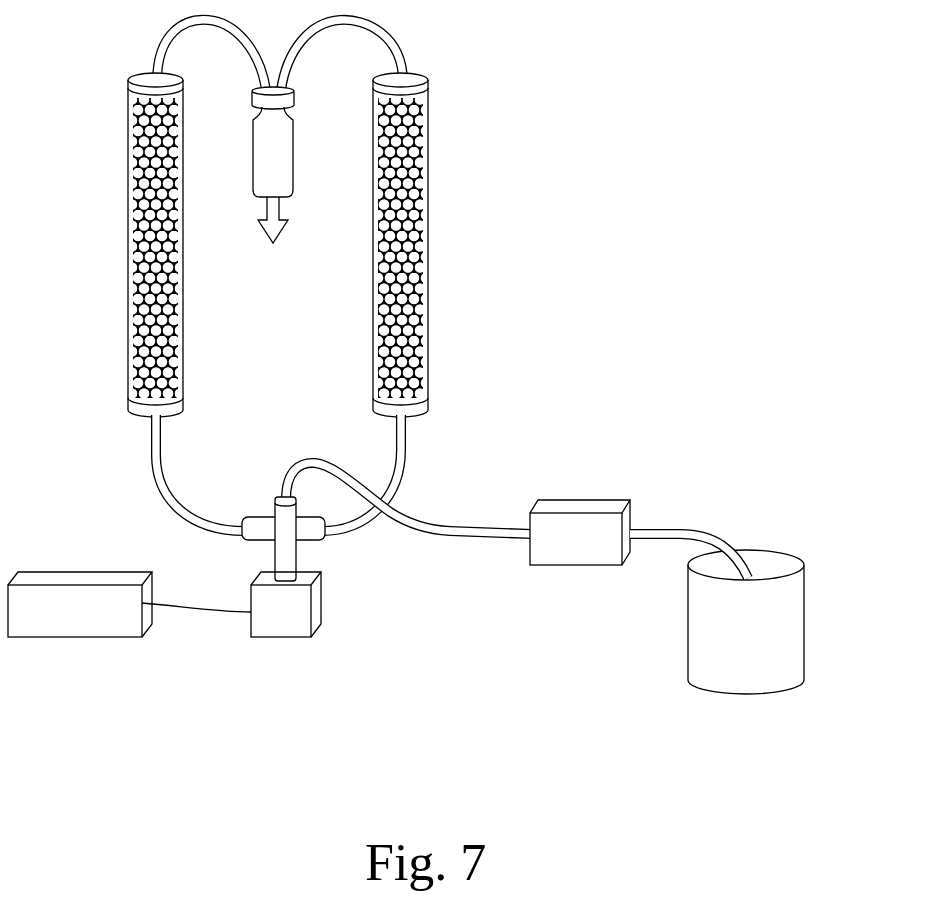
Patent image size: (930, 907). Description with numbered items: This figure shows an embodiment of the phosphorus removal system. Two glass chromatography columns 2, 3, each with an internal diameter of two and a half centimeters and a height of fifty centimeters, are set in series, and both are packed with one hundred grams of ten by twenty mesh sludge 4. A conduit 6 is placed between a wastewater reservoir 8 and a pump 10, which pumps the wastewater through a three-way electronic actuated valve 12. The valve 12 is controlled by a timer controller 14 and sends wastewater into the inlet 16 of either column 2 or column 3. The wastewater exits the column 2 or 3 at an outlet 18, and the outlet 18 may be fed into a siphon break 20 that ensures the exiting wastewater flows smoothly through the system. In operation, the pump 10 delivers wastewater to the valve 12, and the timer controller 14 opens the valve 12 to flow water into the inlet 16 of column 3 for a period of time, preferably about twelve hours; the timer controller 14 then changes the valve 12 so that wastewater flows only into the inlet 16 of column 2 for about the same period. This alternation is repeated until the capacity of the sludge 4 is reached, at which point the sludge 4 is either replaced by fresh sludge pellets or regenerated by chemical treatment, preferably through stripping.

The glass chromatography column 2 is at (430, 112).
The glass chromatography column 3 is at (128, 132).
The sludge 4 is at (130, 240).
The conduit 6 is at (710, 540).
The wastewater reservoir 8 is at (800, 642).
The pump 10 is at (585, 510).
The three-way electronic actuated valve 12 is at (286, 632).
The timer controller 14 is at (78, 632).
The inlet 16 is at (165, 420).
The outlet 18 is at (152, 74).
The siphon break 20 is at (288, 167).